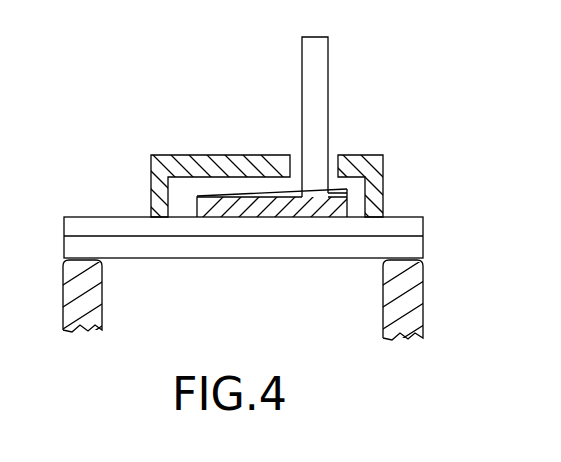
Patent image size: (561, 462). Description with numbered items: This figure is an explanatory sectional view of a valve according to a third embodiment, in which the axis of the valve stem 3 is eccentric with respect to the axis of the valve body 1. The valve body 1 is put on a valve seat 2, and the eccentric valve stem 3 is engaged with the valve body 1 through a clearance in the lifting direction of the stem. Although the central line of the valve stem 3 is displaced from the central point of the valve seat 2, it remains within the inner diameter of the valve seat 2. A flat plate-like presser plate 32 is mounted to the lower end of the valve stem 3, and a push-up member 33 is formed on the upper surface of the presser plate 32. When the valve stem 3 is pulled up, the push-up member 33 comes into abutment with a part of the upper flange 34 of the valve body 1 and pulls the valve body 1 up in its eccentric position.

The valve body 1 is at (423, 245).
The valve seat 2 is at (417, 306).
The valve stem 3 is at (320, 74).
The presser plate 32 is at (255, 208).
The push-up member 33 is at (349, 190).
The upper flange 34 is at (182, 163).